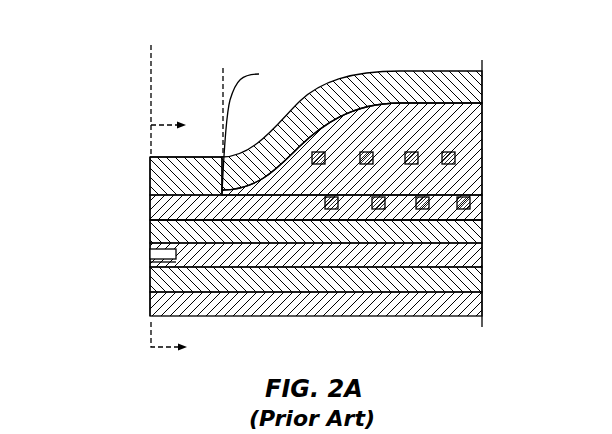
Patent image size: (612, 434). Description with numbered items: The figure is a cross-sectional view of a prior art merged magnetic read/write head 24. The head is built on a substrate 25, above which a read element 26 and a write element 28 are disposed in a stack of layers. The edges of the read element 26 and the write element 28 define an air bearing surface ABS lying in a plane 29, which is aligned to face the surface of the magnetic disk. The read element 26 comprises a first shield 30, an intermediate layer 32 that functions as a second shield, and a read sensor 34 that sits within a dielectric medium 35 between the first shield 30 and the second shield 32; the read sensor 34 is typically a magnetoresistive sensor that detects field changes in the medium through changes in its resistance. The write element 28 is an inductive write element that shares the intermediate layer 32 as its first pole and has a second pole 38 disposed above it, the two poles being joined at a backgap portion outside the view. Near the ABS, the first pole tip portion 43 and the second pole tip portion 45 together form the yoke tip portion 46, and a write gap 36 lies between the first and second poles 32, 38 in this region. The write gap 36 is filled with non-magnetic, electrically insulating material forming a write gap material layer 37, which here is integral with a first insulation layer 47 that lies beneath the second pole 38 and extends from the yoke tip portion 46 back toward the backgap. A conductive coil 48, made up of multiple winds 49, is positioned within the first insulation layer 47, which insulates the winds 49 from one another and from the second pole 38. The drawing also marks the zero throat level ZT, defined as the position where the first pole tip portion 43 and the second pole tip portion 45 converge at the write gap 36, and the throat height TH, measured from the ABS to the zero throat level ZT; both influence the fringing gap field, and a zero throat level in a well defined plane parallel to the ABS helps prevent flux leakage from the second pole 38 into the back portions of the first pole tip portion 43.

The merged magnetic read/write head 24 is at (265, 38).
The substrate 25 is at (470, 303).
The read element 26 is at (55, 213).
The write element 28 is at (80, 70).
The plane 29 is at (154, 59).
The first shield 30 is at (470, 279).
The intermediate layer 32 is at (470, 230).
The read sensor 34 is at (150, 262).
The dielectric medium 35 is at (470, 255).
The write gap 36 is at (142, 217).
The write gap material layer 37 is at (150, 201).
The second pole 38 is at (472, 88).
The first pole tip portion 43 is at (150, 245).
The second pole tip portion 45 is at (184, 185).
The yoke tip portion 46 is at (178, 150).
The first insulation layer 47 is at (470, 126).
The conductive coil 48 is at (470, 202).
The winds 49 is at (455, 158).
The air bearing surface ABS is at (150, 167).
The throat height TH is at (221, 89).
The zero throat level ZT is at (256, 129).